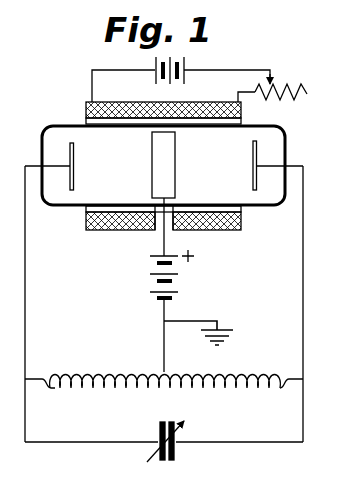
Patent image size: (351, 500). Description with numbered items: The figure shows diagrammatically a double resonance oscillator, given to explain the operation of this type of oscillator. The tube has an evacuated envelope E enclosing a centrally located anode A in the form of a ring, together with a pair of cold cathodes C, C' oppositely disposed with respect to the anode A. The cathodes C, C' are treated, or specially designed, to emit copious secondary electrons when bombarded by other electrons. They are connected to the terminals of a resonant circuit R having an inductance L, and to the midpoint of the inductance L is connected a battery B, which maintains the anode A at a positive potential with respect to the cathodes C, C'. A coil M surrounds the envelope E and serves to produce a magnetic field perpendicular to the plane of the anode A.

The coil M is at (86, 110).
The evacuated envelope E is at (285, 153).
The cold cathode C is at (62, 161).
The cold cathode C' is at (278, 162).
The anode A is at (176, 159).
The battery B is at (181, 292).
The inductance L is at (96, 374).
The resonant circuit R is at (164, 434).